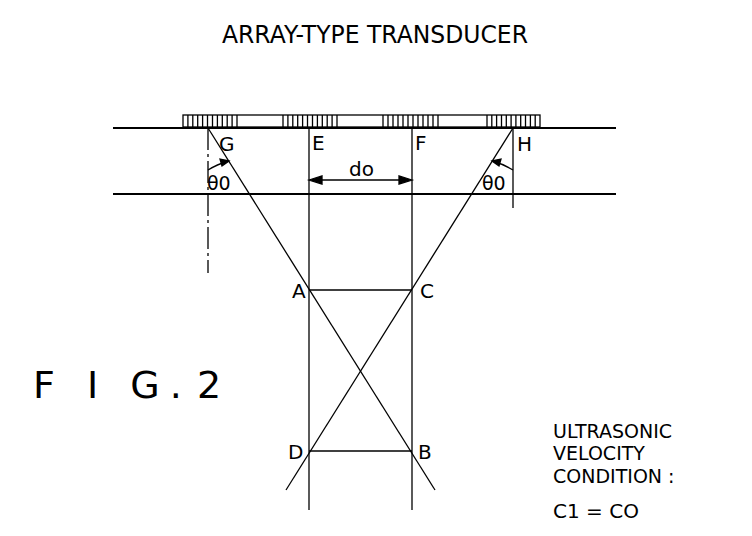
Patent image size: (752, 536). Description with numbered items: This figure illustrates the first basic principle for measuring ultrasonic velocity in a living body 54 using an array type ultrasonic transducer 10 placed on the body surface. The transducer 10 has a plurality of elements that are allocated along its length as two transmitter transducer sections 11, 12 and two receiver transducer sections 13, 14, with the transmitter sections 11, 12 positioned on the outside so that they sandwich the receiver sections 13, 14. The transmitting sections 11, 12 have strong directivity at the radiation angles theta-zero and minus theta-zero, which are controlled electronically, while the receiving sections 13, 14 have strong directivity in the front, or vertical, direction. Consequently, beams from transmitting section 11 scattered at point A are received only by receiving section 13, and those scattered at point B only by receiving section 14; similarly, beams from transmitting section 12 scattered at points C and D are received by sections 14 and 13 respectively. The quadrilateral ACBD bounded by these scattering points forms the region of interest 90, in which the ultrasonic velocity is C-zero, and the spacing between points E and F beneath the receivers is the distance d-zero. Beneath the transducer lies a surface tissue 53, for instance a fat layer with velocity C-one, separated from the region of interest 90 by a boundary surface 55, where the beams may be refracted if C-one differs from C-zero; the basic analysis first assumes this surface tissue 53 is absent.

The array type ultrasonic transducer 10 is at (361, 93).
The transmitter transducer section 11 is at (208, 116).
The transmitter transducer section 12 is at (515, 116).
The receiver transducer section 13 is at (313, 116).
The receiver transducer section 14 is at (413, 116).
The surface tissue 53 is at (598, 150).
The living body 54 is at (596, 240).
The boundary surface 55 is at (594, 194).
The region of interest 90 is at (388, 368).